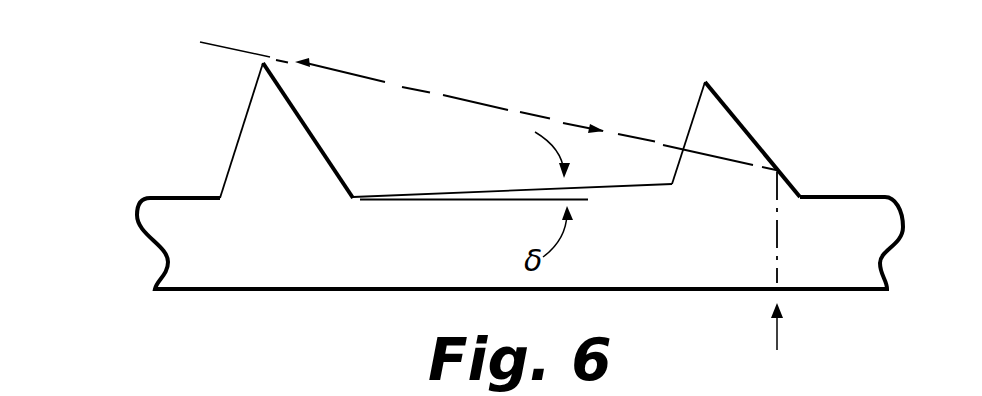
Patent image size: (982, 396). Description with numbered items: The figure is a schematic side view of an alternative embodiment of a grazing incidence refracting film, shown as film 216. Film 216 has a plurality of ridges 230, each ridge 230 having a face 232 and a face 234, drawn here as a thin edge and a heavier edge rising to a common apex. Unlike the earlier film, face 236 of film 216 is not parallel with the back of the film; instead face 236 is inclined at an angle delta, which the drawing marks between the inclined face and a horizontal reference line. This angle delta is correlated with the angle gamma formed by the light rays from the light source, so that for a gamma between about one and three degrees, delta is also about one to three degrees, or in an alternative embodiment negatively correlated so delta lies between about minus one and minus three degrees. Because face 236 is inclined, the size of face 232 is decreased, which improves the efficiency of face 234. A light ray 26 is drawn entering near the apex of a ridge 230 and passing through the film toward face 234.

The film 216 is at (138, 211).
The light ray 26 is at (470, 100).
The ridges 230 is at (262, 64).
The face 232 is at (246, 115).
The face 234 is at (312, 137).
The face 236 is at (452, 181).